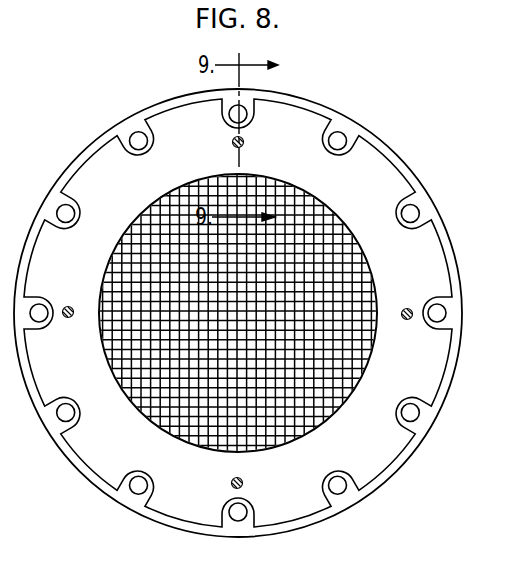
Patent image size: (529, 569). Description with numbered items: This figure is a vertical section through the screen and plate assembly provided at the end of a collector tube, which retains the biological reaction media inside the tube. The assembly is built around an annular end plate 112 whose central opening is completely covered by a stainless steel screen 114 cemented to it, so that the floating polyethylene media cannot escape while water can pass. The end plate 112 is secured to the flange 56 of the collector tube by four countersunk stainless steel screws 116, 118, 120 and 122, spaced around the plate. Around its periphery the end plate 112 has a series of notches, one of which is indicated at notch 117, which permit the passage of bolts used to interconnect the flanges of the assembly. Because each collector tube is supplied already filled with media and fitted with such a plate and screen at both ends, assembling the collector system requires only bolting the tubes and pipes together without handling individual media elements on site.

The flange 56 is at (352, 118).
The annular end plate 112 is at (382, 177).
The stainless steel screen 114 is at (295, 402).
The countersunk stainless steel screw 116 is at (244, 141).
The notch 117 is at (426, 214).
The countersunk stainless steel screw 118 is at (70, 306).
The countersunk stainless steel screw 120 is at (231, 483).
The countersunk stainless steel screw 122 is at (407, 321).